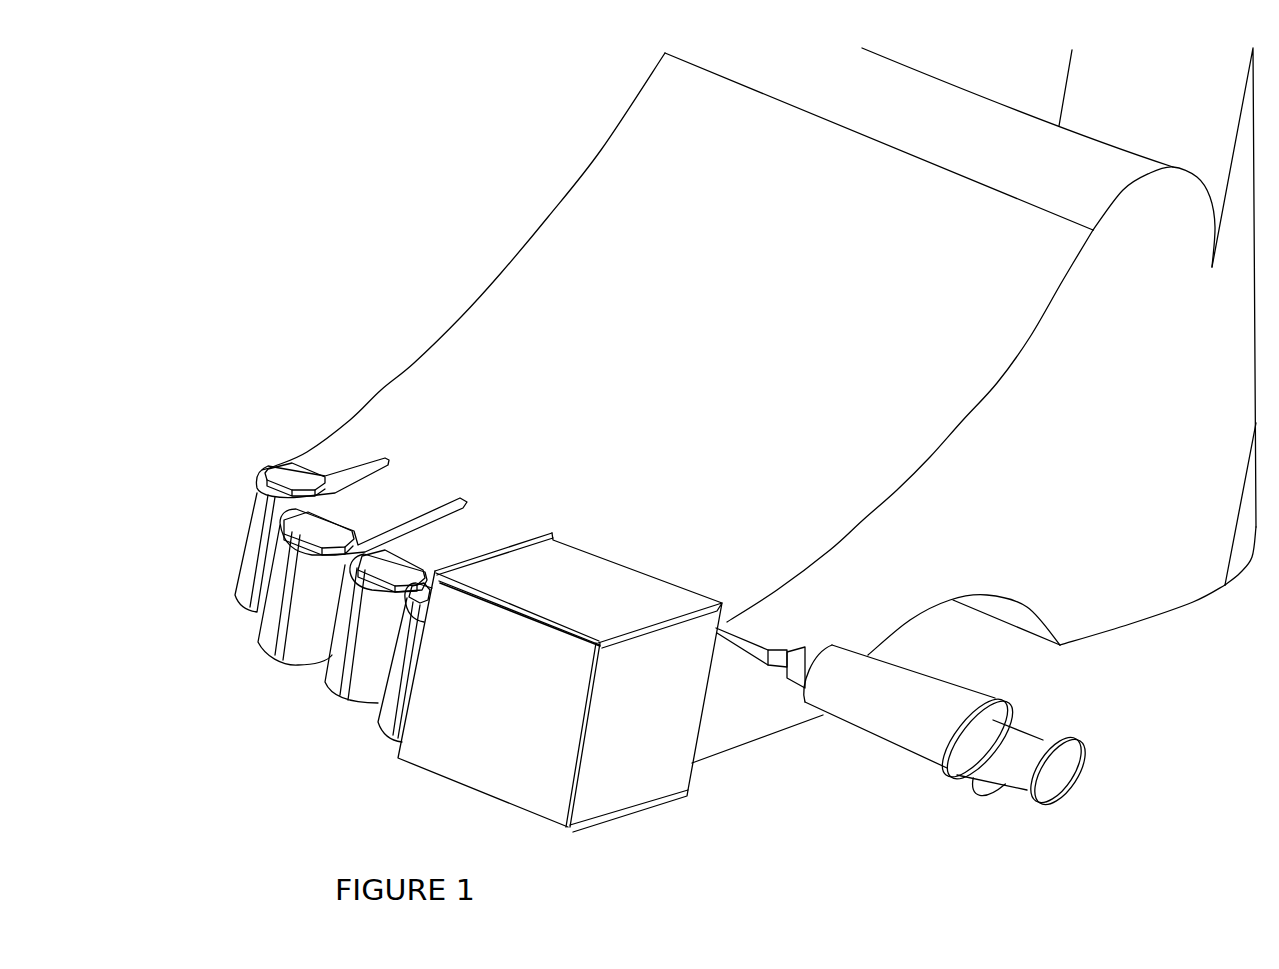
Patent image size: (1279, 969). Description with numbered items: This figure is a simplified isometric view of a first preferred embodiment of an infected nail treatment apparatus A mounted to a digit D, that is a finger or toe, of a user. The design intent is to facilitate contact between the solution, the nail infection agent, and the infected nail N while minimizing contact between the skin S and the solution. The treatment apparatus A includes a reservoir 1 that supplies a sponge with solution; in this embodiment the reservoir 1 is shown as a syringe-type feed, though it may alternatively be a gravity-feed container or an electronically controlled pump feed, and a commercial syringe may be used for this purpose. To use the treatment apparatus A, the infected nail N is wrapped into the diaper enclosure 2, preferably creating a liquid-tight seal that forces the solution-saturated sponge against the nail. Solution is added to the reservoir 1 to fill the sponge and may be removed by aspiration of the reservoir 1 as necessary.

The skin S is at (433, 392).
The digit D is at (387, 495).
The infected nail N is at (293, 518).
The treatment apparatus A is at (215, 730).
The reservoir 1 is at (1083, 736).
The diaper enclosure 2 is at (558, 530).